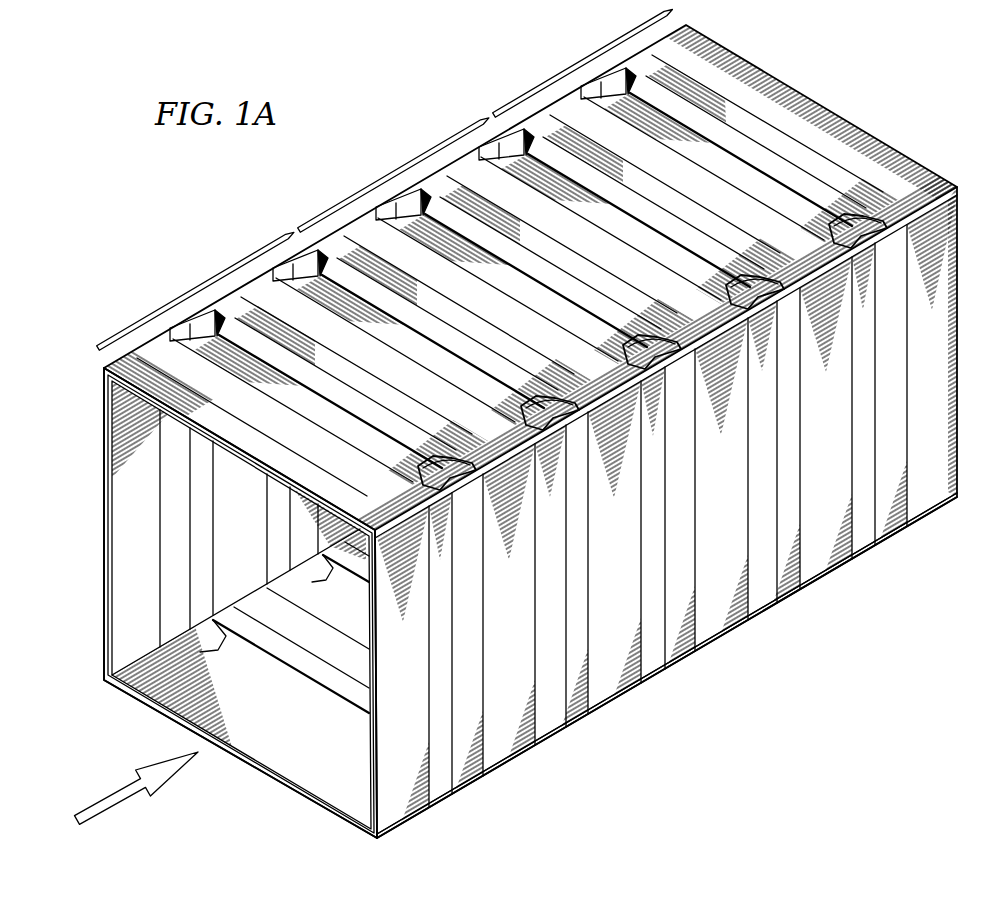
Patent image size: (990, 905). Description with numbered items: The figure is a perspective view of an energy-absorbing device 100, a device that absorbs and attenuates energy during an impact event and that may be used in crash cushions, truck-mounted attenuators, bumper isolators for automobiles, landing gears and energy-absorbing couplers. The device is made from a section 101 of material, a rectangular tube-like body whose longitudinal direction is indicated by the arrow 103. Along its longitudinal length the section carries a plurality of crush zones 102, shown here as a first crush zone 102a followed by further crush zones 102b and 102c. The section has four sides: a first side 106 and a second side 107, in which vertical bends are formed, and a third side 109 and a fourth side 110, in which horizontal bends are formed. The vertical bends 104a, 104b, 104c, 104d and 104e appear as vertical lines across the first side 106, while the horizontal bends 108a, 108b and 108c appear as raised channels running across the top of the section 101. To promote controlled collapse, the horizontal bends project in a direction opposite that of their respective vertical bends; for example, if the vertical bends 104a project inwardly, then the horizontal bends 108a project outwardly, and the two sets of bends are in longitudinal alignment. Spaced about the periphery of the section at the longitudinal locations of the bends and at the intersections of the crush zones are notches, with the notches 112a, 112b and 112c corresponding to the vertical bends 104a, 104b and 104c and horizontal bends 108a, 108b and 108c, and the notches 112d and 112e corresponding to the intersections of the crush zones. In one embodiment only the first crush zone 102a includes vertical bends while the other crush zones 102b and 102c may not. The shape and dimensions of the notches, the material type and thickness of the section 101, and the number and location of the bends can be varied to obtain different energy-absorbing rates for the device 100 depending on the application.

The energy-absorbing device 100 is at (245, 189).
The section of material 101 is at (846, 113).
The crush zones 102 is at (357, 180).
The first crush zone 102a is at (195, 291).
The crush zone 102b is at (393, 175).
The crush zone 102c is at (583, 64).
The arrow 103 is at (120, 793).
The vertical bends 104a is at (453, 778).
The vertical bends 104b is at (666, 652).
The vertical bends 104c is at (877, 545).
The vertical bend 104d is at (572, 733).
The vertical bend 104e is at (785, 605).
The first side 106 is at (405, 815).
The second side 107 is at (125, 500).
The horizontal bends 108a is at (331, 402).
The horizontal bends 108b is at (525, 274).
The horizontal bends 108c is at (738, 157).
The third side 109 is at (248, 458).
The fourth side 110 is at (298, 782).
The notches 112a is at (438, 458).
The notches 112b is at (652, 340).
The notches 112c is at (863, 218).
The notches 112d is at (545, 400).
The notches 112e is at (758, 280).